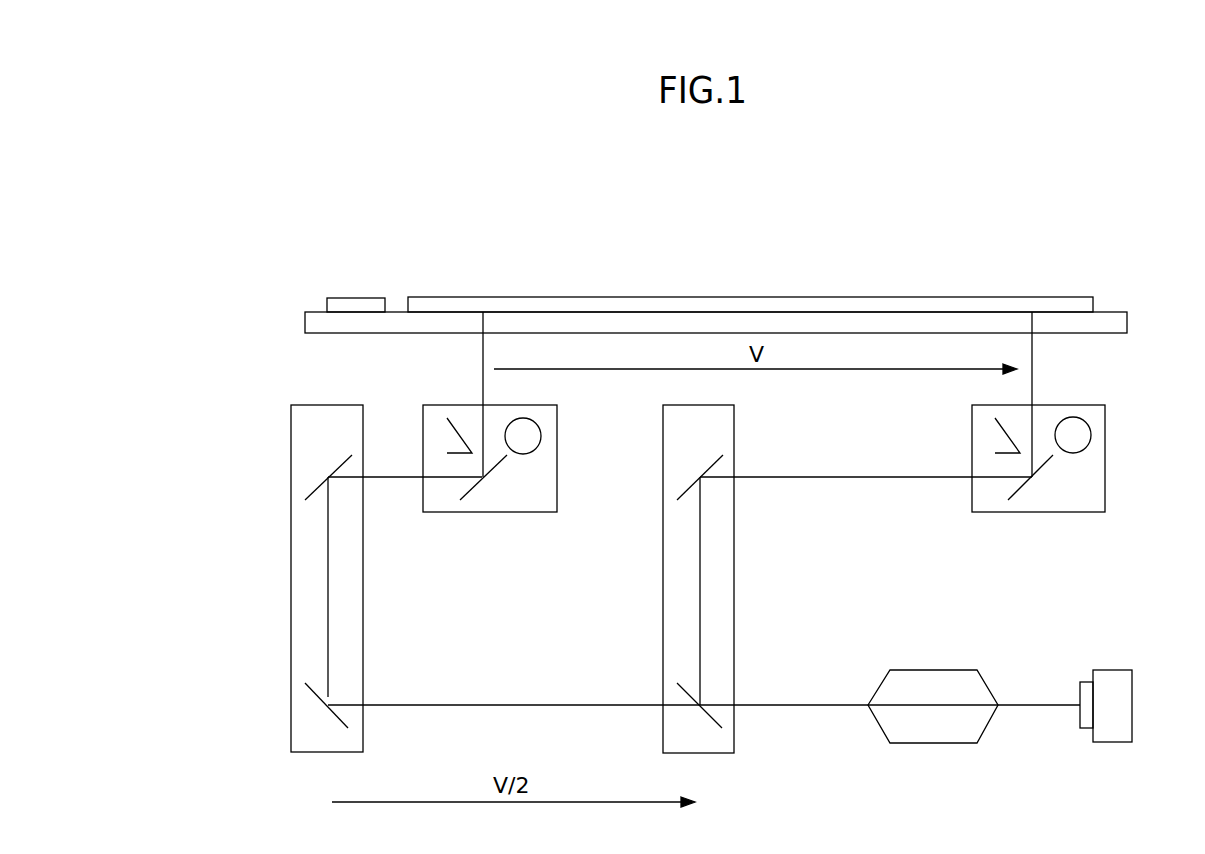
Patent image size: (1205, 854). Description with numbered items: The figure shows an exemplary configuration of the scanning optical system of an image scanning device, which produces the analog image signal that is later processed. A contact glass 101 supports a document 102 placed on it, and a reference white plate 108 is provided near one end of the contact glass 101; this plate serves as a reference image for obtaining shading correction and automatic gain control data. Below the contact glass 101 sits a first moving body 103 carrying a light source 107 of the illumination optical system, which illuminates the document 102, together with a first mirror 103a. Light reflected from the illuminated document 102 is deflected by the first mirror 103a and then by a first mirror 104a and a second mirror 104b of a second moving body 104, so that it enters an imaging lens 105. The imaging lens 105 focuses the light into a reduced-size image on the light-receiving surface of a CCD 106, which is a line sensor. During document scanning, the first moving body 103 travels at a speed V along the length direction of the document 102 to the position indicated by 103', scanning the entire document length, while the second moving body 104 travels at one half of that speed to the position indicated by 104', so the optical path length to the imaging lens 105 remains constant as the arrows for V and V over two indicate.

The contact glass 101 is at (305, 318).
The document 102 is at (613, 297).
The first moving body 103 is at (516, 499).
The first moving body position 103' is at (1079, 458).
The first mirror 103a is at (461, 500).
The second moving body 104 is at (274, 578).
The second moving body position 104' is at (740, 579).
The first mirror 104a is at (322, 485).
The second mirror 104b is at (312, 702).
The imaging lens 105 is at (913, 670).
The CCD 106 is at (1113, 670).
The light source 107 is at (543, 433).
The reference white plate 108 is at (360, 298).